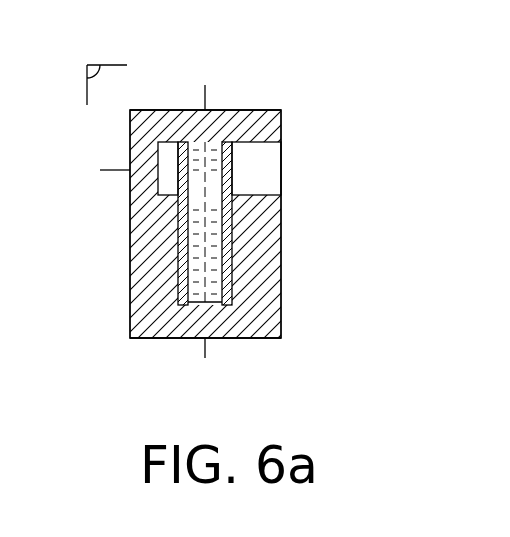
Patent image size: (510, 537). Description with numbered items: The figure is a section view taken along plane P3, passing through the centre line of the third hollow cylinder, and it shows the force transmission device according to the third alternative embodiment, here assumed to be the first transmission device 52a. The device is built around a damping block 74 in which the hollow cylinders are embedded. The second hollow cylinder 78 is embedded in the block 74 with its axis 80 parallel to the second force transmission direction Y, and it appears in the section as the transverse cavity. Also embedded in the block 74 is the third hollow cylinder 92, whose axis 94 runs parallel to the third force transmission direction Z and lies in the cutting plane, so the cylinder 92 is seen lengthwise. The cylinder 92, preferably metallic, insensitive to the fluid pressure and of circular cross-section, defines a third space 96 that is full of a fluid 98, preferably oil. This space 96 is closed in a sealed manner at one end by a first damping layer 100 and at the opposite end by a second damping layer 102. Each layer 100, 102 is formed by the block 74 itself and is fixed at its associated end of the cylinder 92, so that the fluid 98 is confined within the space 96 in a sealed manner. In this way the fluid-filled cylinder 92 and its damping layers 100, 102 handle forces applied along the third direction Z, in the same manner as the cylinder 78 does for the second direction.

The section plane P3 is at (87, 65).
The first transmission device 52a is at (298, 92).
The damping block 74 is at (124, 226).
The second hollow cylinder 78 is at (178, 143).
The axis 80 is at (258, 170).
The third hollow cylinder 92 is at (232, 218).
The axis 94 is at (204, 350).
The third space 96 is at (158, 147).
The fluid 98 is at (193, 198).
The first damping layer 100 is at (220, 117).
The second damping layer 102 is at (218, 325).